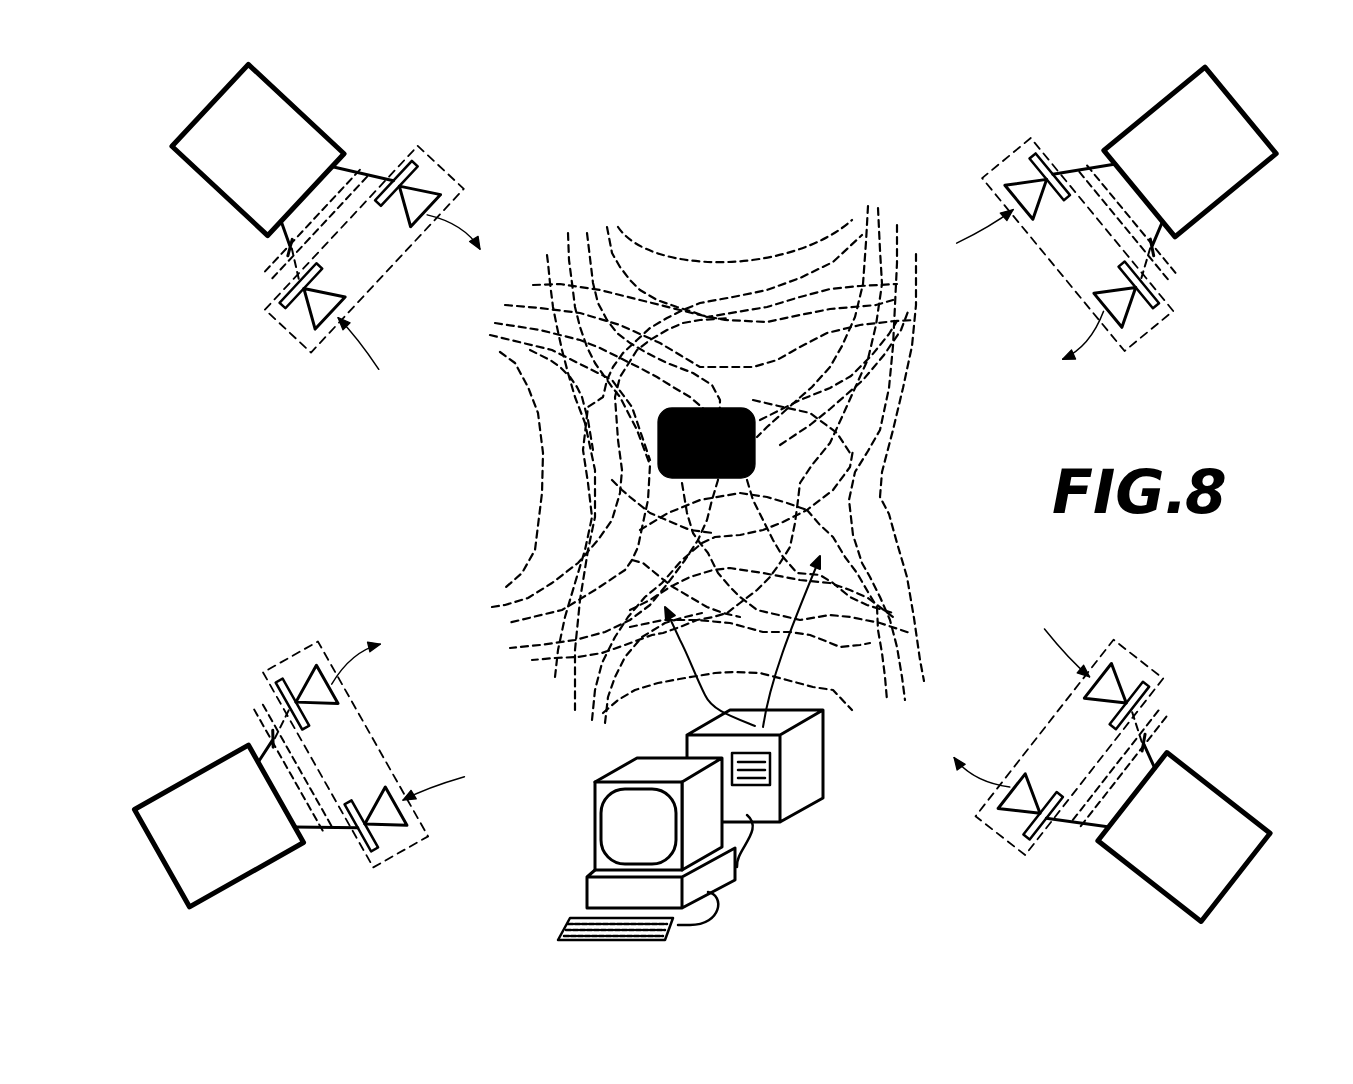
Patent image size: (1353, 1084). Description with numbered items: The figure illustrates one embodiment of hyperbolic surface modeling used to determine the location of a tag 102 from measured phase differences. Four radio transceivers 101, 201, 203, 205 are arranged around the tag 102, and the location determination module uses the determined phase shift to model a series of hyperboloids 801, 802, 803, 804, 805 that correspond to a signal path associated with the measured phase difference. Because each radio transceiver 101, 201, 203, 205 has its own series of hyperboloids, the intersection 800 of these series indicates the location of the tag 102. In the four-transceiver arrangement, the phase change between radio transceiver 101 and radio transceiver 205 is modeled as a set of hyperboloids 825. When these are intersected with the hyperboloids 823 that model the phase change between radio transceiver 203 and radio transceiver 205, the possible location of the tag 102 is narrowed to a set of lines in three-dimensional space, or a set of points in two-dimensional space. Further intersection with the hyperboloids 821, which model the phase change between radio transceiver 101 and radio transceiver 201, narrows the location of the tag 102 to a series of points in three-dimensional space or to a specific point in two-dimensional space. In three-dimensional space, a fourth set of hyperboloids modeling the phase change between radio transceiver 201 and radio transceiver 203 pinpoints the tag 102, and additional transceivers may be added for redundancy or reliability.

The radio transceiver 101 is at (207, 765).
The radio transceiver 201 is at (310, 118).
The radio transceiver 203 is at (1147, 118).
The radio transceiver 205 is at (1196, 767).
The tag 102 is at (722, 408).
The intersection 800 is at (658, 468).
The hyperboloid 801 is at (657, 250).
The hyperboloid 802 is at (608, 226).
The hyperboloid 803 is at (587, 232).
The hyperboloid 804 is at (568, 232).
The hyperboloid 805 is at (547, 253).
The hyperboloids 821 is at (540, 493).
The hyperboloids 823 is at (880, 497).
The hyperboloids 825 is at (553, 675).